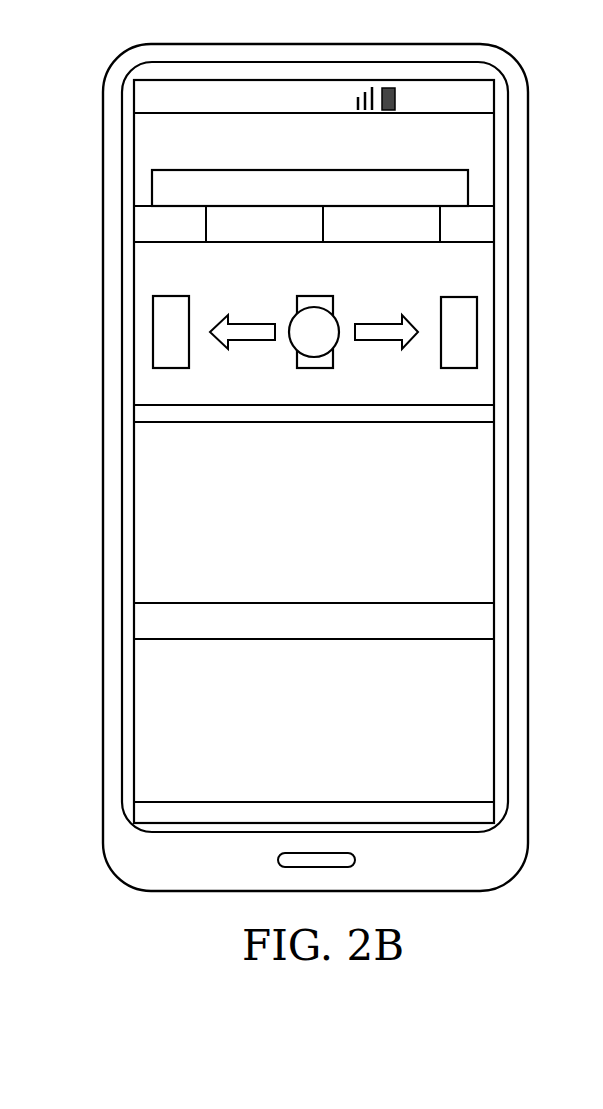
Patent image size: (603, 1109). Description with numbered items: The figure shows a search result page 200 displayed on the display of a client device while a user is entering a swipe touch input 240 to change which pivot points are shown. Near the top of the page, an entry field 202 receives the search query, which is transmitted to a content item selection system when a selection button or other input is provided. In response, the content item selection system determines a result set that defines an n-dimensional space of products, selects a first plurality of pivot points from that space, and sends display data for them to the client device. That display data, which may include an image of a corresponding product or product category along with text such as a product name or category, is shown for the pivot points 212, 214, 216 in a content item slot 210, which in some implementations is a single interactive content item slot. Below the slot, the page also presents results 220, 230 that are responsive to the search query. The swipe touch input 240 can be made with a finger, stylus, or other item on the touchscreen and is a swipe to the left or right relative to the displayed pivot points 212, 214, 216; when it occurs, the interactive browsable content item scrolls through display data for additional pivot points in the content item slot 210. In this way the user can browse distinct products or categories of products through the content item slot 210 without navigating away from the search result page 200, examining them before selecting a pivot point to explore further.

The search result page 200 is at (110, 463).
The entry field 202 is at (465, 180).
The content item slot 210 is at (492, 316).
The pivot point 212 is at (187, 357).
The pivot point 214 is at (332, 352).
The pivot point 216 is at (475, 356).
The result 220 is at (492, 514).
The result 230 is at (492, 722).
The swipe touch input 240 is at (332, 314).